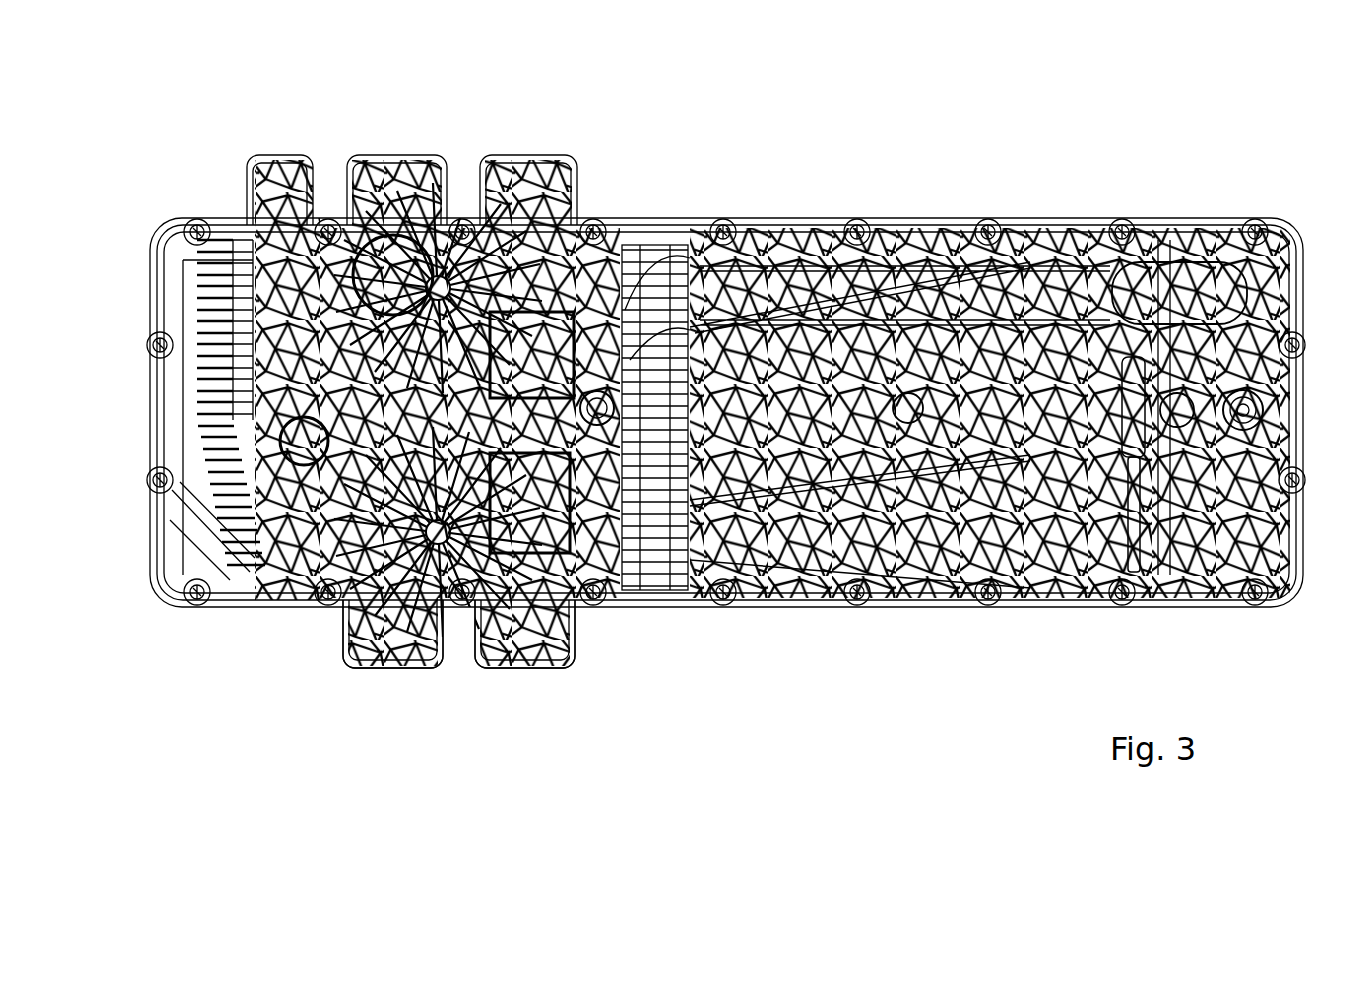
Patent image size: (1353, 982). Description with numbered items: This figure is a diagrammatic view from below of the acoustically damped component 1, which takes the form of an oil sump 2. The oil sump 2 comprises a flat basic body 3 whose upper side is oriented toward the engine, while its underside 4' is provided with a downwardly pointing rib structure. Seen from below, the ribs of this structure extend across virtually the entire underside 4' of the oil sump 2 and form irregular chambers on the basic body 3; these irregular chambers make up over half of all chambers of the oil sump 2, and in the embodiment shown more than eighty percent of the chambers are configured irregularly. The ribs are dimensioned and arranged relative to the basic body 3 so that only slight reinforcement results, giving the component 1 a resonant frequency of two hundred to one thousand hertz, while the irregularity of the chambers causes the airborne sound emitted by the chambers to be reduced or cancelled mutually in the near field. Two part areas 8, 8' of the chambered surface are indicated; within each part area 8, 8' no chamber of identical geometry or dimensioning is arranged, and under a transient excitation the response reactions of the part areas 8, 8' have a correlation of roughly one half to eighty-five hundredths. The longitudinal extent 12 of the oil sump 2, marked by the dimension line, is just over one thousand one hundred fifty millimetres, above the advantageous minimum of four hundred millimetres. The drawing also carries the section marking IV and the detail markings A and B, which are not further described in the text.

The acoustically damped component 1 is at (827, 171).
The oil sump 2 is at (862, 171).
The basic body 3 is at (782, 171).
The underside 4' is at (921, 338).
The part area 8 is at (459, 685).
The part area 8' is at (654, 477).
The longitudinal extent 12 is at (150, 30).
The detail region A is at (399, 228).
The detail region B is at (285, 456).
The section line IV- IV is at (328, 290).